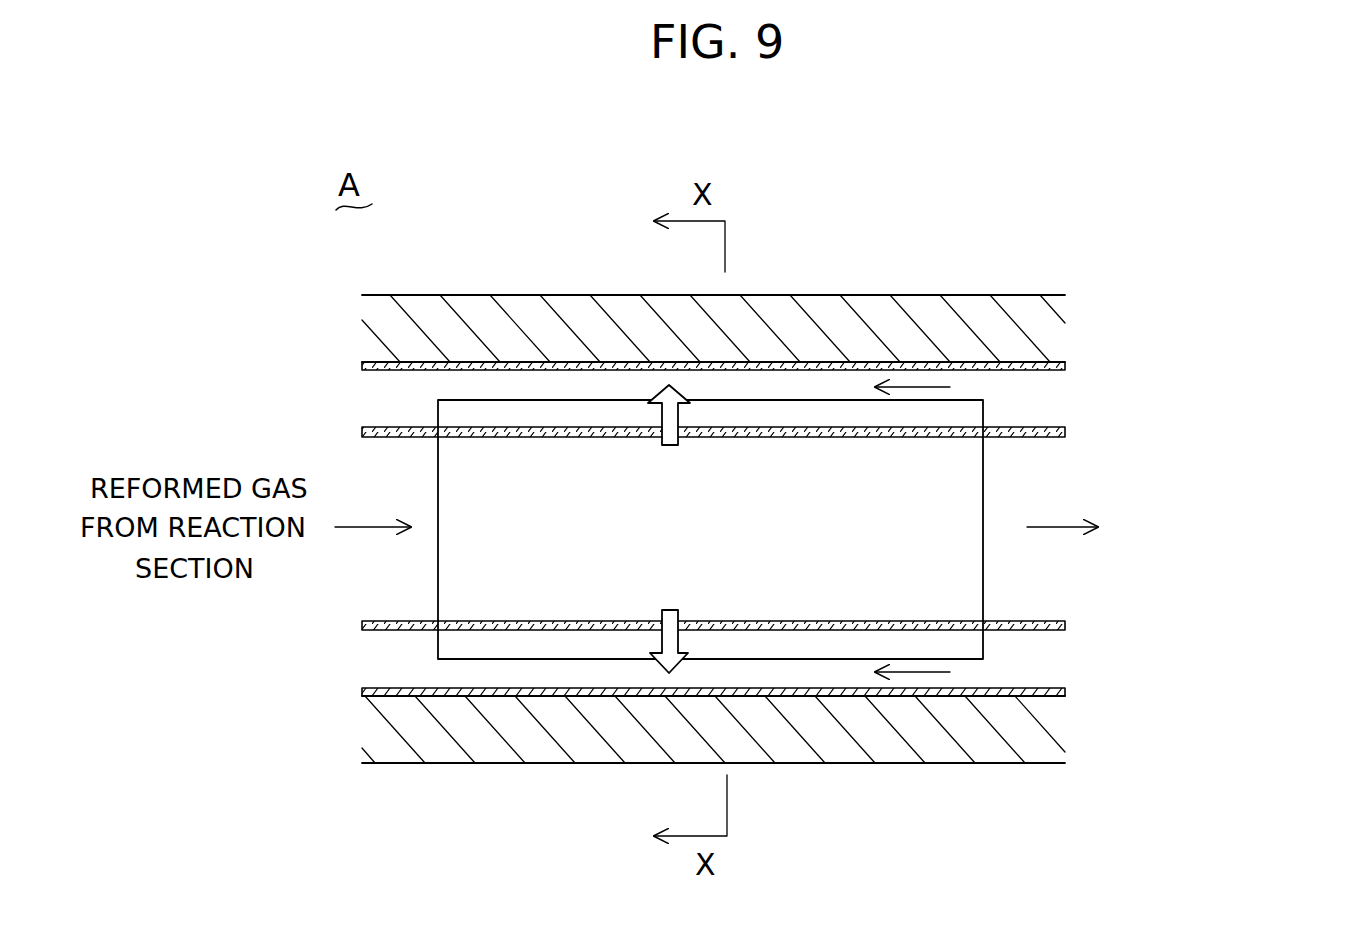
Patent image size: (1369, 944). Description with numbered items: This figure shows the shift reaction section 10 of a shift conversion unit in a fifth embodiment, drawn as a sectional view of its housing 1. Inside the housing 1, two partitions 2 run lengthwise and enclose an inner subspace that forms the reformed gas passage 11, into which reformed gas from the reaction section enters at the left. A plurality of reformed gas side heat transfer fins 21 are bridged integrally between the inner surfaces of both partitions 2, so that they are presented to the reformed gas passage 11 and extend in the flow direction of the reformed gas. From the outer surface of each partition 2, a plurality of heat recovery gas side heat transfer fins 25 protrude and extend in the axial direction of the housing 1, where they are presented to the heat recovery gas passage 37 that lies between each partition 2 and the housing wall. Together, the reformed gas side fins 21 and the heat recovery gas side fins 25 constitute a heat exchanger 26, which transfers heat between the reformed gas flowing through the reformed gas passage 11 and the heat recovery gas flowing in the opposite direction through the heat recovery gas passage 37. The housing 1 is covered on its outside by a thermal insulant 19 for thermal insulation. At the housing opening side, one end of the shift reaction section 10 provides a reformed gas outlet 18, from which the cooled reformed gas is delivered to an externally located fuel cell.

The housing 1 is at (796, 348).
The partition 2 is at (362, 432).
The shift reaction section 10 is at (531, 434).
The reformed gas passage 11 is at (418, 593).
The reformed gas outlet 18 is at (1048, 484).
The thermal insulant 19 is at (889, 738).
The reformed gas side heat transfer fin 21 is at (965, 580).
The heat recovery gas side heat transfer fin 25 is at (957, 372).
The heat exchanger 26 is at (851, 394).
The heat recovery gas passage 37 is at (713, 512).